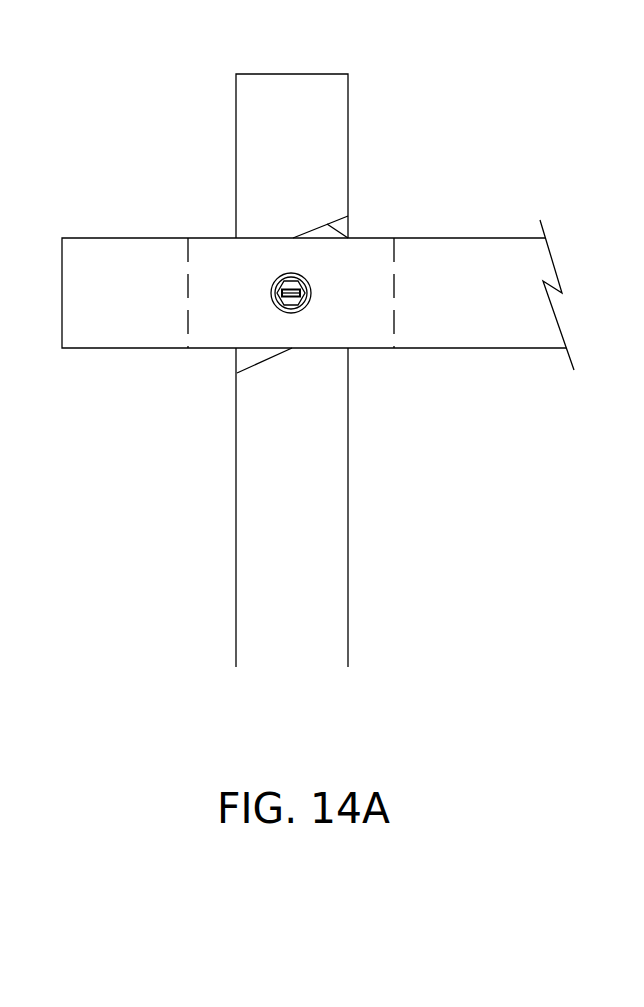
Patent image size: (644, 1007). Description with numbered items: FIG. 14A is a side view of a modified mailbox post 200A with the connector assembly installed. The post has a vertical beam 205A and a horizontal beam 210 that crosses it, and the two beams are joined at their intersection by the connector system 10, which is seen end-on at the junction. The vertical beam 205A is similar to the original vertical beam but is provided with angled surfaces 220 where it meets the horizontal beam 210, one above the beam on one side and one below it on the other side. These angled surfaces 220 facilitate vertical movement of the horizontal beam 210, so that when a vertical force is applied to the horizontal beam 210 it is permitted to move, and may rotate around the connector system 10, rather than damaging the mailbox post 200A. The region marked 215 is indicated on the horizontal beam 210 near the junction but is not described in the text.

The connector system 10 is at (356, 343).
The modified mailbox post 200A is at (186, 510).
The vertical beam 205A is at (357, 482).
The horizontal beam 210 is at (318, 251).
The connection plate region 215 is at (259, 246).
The angled surfaces 220 is at (350, 238).